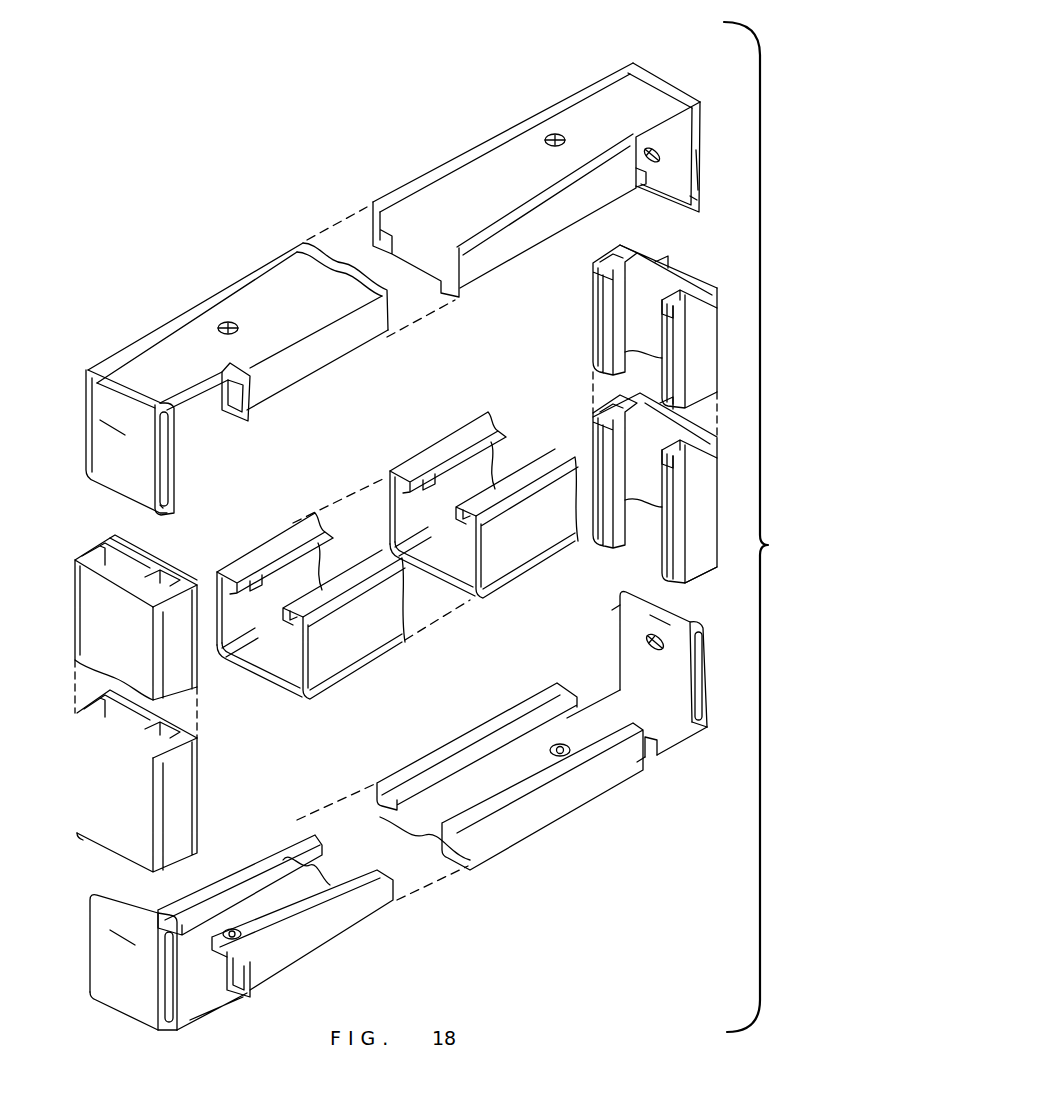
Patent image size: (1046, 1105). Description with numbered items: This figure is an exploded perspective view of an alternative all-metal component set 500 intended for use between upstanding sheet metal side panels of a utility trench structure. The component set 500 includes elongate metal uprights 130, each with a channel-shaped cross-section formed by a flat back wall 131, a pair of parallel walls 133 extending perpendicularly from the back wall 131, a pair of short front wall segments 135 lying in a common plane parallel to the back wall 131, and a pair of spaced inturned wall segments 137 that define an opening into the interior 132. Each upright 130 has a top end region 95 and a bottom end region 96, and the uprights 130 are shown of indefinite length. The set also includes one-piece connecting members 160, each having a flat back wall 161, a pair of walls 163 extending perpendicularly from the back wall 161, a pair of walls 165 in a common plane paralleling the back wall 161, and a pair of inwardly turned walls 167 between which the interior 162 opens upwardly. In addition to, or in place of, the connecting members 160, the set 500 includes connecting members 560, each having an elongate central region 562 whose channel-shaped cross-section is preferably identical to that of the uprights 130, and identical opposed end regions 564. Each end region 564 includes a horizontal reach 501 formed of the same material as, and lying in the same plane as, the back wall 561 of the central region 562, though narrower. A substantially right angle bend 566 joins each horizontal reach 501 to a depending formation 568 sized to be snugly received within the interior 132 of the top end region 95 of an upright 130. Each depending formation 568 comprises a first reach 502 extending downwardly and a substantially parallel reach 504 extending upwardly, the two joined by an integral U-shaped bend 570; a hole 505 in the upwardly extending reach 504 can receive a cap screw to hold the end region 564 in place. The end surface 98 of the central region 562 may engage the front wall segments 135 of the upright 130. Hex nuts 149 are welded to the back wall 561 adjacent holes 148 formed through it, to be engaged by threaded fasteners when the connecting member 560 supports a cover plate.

The component set 500 is at (195, 190).
The connecting member 560 is at (290, 229).
The back wall 561 is at (497, 150).
The central region 562 is at (488, 262).
The end region 564 is at (671, 70).
The right angle bend 566 is at (652, 62).
The depending formation 568 is at (709, 107).
The U-shaped bend 570 is at (118, 893).
The horizontal reach 501 is at (140, 348).
The first reach of material 502 is at (705, 165).
The upwardly extending reach 504 is at (178, 443).
The hole 505 is at (660, 158).
The end surface 98 is at (633, 176).
The hole 148 is at (555, 134).
The hex nut 149 is at (235, 927).
The connecting member 160 is at (526, 578).
The back wall 161 is at (272, 697).
The interior 162 is at (242, 670).
The wall 163 is at (312, 555).
The wall 165 is at (310, 522).
The inwardly turned wall 167 is at (260, 575).
The upright 130 is at (720, 302).
The back wall 131 is at (85, 595).
The interior 132 is at (672, 268).
The parallel wall 133 is at (600, 250).
The front wall segment 135 is at (600, 293).
The inturned wall segment 137 is at (648, 262).
The top end region 95 is at (700, 275).
The bottom end region 96 is at (705, 566).